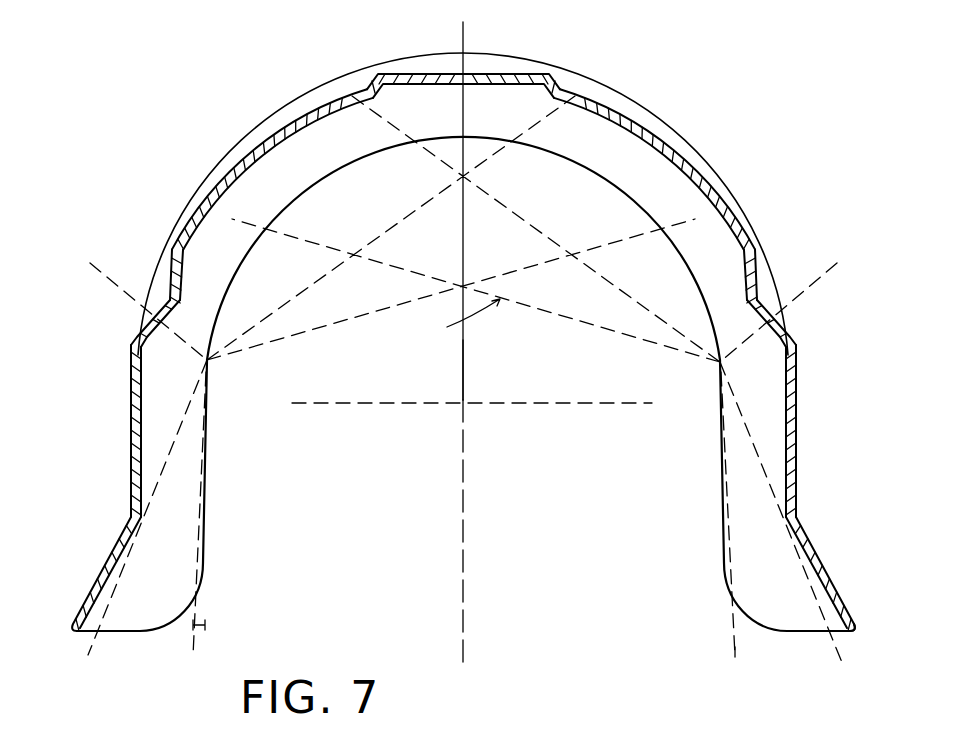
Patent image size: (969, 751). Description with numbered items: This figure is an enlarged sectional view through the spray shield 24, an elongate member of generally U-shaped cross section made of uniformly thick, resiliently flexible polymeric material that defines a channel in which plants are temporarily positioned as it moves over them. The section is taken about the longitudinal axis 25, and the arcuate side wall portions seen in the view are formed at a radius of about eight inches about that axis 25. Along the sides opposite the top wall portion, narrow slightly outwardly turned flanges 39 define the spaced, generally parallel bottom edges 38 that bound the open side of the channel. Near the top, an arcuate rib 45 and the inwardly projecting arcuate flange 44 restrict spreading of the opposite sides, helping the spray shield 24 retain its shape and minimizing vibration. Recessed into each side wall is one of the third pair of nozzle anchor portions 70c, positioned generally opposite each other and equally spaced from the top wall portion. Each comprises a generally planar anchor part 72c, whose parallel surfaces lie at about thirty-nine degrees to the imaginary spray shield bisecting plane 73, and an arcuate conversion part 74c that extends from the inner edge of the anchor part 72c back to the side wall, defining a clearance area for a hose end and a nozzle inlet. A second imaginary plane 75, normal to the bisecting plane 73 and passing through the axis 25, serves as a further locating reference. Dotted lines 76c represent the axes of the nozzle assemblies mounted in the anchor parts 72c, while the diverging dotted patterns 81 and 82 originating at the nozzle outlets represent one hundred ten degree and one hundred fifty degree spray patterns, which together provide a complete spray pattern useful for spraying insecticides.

The spray shield 24 is at (683, 141).
The arcuate ribs 45 is at (579, 82).
The arcuate flange 44 is at (327, 172).
The longitudinal axis 25 is at (464, 404).
The imaginary spray shield bisecting plane 73 is at (466, 361).
The second imaginary plane 75 is at (411, 406).
The diverging dotted pattern 81 is at (393, 304).
The diverging dotted pattern 82 is at (404, 217).
The nozzle anchor portions 70c is at (157, 274).
The arcuate conversion part 74c is at (178, 271).
The anchor part 72c is at (146, 336).
The dotted lines 76c is at (96, 266).
The flanges 39 is at (103, 571).
The bottom edges 38 is at (853, 627).